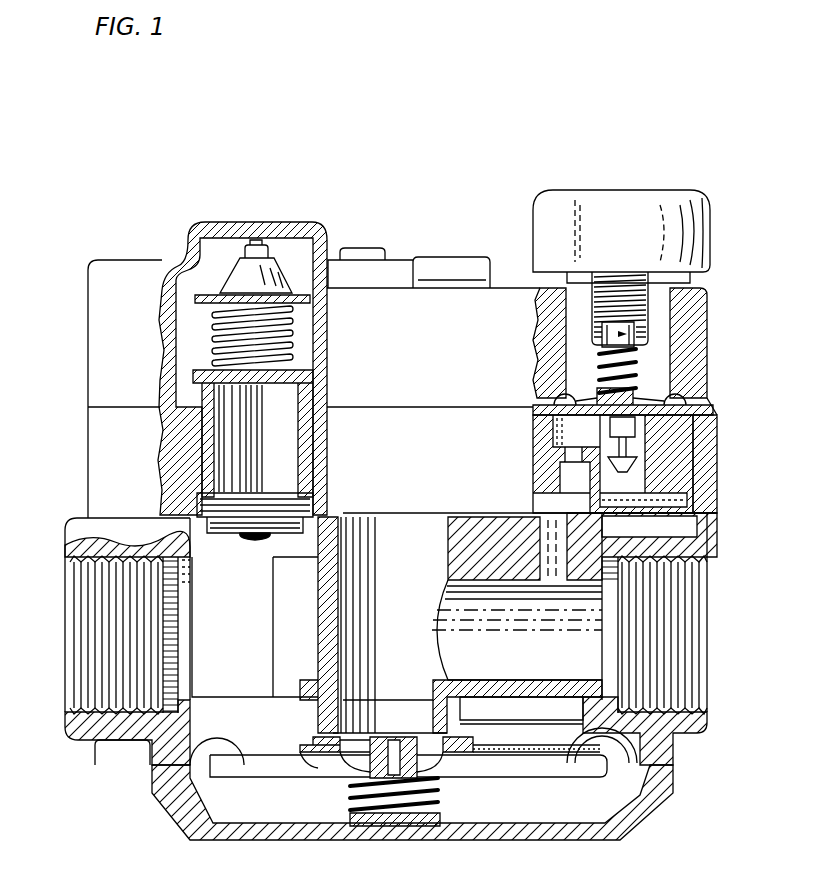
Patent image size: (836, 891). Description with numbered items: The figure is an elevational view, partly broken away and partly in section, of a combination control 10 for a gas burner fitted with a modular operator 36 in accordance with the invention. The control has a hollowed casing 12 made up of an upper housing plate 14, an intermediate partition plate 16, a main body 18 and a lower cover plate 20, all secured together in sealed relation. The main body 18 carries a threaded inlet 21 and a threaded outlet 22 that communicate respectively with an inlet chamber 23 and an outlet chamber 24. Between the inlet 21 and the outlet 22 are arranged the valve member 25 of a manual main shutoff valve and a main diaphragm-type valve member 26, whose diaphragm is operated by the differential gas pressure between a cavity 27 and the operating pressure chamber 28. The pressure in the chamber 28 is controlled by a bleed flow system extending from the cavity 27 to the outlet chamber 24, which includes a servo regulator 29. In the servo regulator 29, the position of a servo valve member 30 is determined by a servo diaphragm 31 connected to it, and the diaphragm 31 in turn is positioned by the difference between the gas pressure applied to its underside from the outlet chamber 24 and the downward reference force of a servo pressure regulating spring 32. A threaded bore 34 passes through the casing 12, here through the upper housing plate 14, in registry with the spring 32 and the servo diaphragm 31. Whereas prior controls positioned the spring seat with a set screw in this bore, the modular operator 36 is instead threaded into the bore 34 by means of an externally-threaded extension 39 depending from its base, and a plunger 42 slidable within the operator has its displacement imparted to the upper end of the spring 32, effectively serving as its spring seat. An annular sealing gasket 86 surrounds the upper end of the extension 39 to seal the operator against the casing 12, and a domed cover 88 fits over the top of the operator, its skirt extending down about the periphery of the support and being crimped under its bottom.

The combination control 10 is at (405, 176).
The hollowed casing 12 is at (714, 372).
The upper housing plate 14 is at (707, 299).
The intermediate partition plate 16 is at (707, 475).
The main body 18 is at (703, 537).
The lower cover plate 20 is at (672, 782).
The threaded inlet 21 is at (87, 619).
The threaded outlet 22 is at (697, 614).
The inlet chamber 23 is at (258, 631).
The outlet chamber 24 is at (529, 656).
The valve member 25 is at (257, 539).
The main diaphragm-type valve member 26 is at (502, 766).
The cavity 27 is at (531, 719).
The operating pressure chamber 28 is at (516, 812).
The servo regulator 29 is at (660, 418).
The servo valve member 30 is at (610, 467).
The servo diaphragm 31 is at (533, 391).
The servo pressure regulating spring 32 is at (599, 373).
The threaded bore 34 is at (602, 340).
The modular operator 36 is at (537, 186).
The externally-threaded extension 39 is at (617, 282).
The plunger 42 is at (640, 335).
The annular sealing gasket 86 is at (670, 274).
The domed cover 88 is at (705, 232).